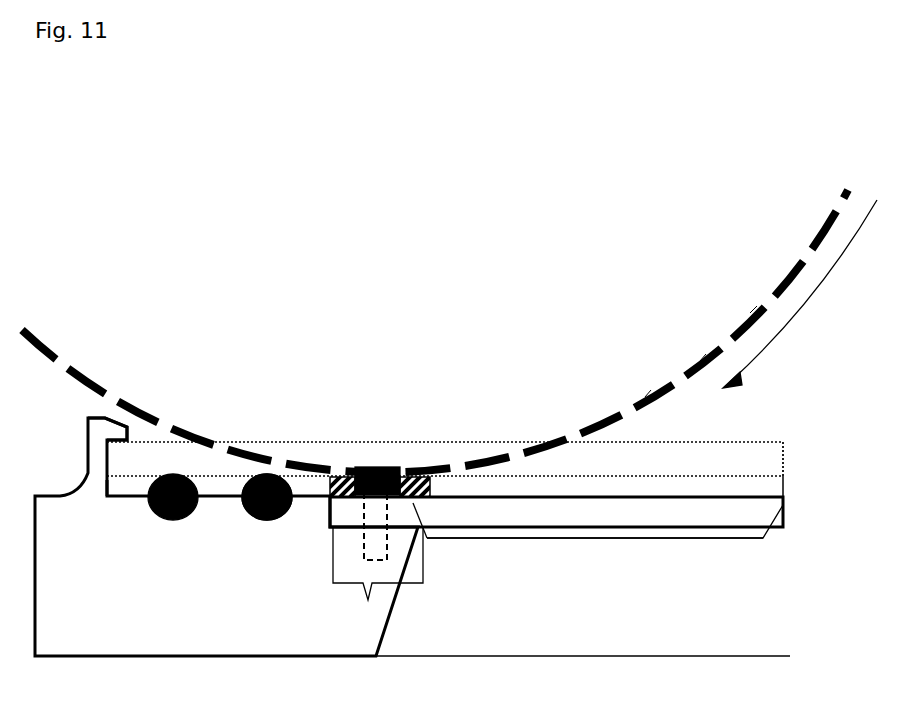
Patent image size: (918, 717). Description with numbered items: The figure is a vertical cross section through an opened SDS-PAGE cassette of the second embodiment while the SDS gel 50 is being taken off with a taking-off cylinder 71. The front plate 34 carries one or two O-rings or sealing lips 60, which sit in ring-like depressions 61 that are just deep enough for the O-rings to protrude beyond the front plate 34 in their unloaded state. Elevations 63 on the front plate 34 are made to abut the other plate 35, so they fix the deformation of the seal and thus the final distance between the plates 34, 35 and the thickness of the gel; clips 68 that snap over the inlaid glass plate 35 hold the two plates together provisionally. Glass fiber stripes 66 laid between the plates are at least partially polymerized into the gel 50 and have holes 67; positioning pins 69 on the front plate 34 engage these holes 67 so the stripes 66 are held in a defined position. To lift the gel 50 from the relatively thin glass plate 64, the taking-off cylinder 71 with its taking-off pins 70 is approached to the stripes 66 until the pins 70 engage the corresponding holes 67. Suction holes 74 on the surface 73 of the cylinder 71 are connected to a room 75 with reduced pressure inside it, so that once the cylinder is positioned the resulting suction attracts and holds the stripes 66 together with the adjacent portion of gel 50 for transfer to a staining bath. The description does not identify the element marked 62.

The front plate 34 is at (130, 617).
The glass plate 35 is at (468, 440).
The SDS-PAGE gel 50 is at (500, 538).
The O-rings or sealing lips 60 is at (252, 518).
The ring-like depressions 61 is at (267, 497).
The corner 62 is at (112, 487).
The elevations 63 is at (300, 458).
The glass plate 64 is at (472, 505).
The glass fiber stripes 66 is at (368, 600).
The holes 67 is at (338, 506).
The clips 68 is at (100, 433).
The positioning pins 69 is at (365, 540).
The taking-off pins 70 is at (372, 468).
The taking-off cylinder 71 is at (566, 416).
The surface 73 is at (685, 400).
The suction holes 74 is at (408, 470).
The room with reduced pressure 75 is at (349, 264).